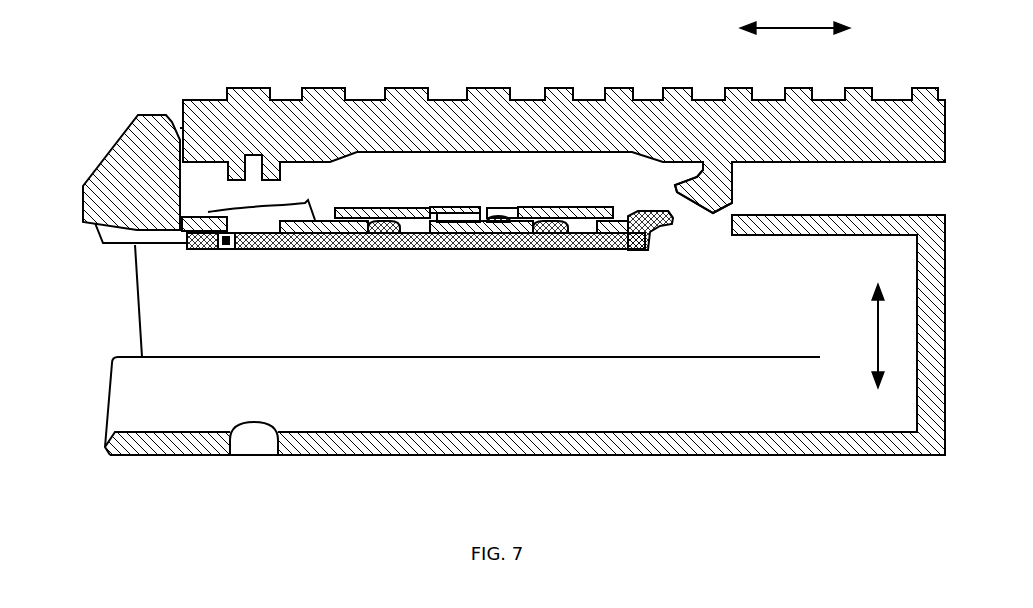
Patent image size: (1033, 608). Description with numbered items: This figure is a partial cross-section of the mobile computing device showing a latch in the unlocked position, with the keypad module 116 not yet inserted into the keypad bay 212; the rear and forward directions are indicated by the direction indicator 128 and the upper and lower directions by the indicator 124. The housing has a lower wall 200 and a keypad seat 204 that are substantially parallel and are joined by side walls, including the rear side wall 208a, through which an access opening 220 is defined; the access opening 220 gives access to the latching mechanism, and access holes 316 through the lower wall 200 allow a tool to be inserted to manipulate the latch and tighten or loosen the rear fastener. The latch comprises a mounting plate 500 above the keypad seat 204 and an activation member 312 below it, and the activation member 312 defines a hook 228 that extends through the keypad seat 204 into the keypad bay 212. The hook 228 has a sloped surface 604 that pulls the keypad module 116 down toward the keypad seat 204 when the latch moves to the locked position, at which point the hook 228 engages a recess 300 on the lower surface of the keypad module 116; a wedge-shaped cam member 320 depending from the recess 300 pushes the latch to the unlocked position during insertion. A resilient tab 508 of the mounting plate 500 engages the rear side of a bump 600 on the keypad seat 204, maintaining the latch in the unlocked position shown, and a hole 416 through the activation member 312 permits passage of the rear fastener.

The keypad module 116 is at (367, 92).
The longitudinal (rear-forward) direction 128 is at (810, 19).
The vertical (upper-lower) direction 124 is at (886, 334).
The recess 300 is at (694, 172).
The cam member 320 is at (722, 206).
The rear side wall 208a is at (83, 188).
The keypad seat 204 is at (314, 216).
The mounting plate 500 is at (393, 209).
The resilient tab 508 is at (470, 207).
The keypad bay 212 is at (540, 191).
The bump 600 is at (497, 223).
The hole 416 is at (225, 251).
The activation member 312 is at (275, 251).
The hook 228 is at (646, 226).
The sloped surface 604 is at (665, 219).
The access opening 220 is at (139, 278).
The lower wall 200 is at (347, 430).
The access hole 316 is at (258, 448).